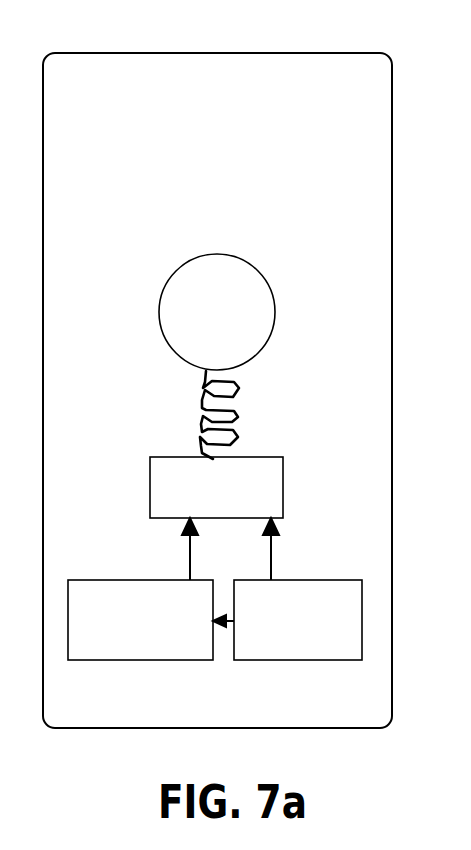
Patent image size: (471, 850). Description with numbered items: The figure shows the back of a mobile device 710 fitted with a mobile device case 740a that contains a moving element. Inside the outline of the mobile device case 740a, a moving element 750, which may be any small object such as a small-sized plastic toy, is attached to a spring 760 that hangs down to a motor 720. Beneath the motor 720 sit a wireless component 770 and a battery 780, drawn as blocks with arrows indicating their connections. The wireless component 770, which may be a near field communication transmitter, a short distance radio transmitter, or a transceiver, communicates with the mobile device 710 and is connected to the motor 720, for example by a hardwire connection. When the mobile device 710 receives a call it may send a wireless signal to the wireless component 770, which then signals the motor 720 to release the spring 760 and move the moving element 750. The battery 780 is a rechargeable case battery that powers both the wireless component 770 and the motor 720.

The mobile device 710 is at (217, 364).
The mobile device case 740a is at (217, 390).
The moving element 750 is at (217, 312).
The spring 760 is at (244, 415).
The motor 720 is at (216, 487).
The wireless component 770 is at (140, 620).
The battery 780 is at (298, 620).